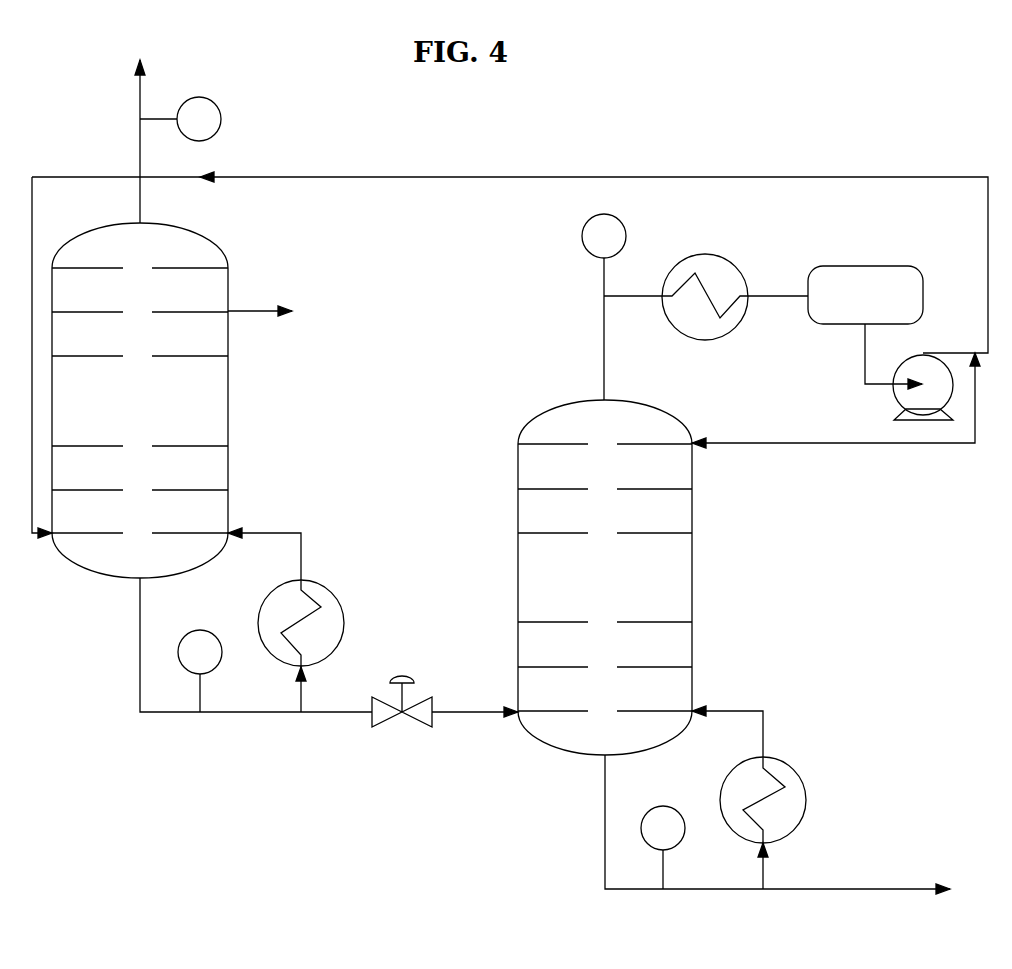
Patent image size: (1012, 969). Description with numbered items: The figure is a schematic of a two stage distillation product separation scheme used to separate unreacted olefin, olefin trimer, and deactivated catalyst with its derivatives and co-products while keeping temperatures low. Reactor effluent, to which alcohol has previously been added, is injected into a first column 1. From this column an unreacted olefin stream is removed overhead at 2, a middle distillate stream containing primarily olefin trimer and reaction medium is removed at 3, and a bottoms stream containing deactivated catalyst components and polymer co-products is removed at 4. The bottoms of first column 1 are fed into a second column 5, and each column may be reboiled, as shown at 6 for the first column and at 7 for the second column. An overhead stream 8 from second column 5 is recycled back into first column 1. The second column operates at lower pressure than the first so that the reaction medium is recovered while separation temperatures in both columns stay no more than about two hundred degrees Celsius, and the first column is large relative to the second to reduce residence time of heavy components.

The first column 1 is at (207, 232).
The unreacted olefin stream 2 is at (510, 299).
The middle distillate stream 3 is at (260, 300).
The bottoms stream 4 is at (329, 652).
The second column 5 is at (648, 406).
The reboiler of column 1 6 is at (301, 552).
The reboiler of column 5 7 is at (763, 733).
The overhead stream 8 is at (767, 317).